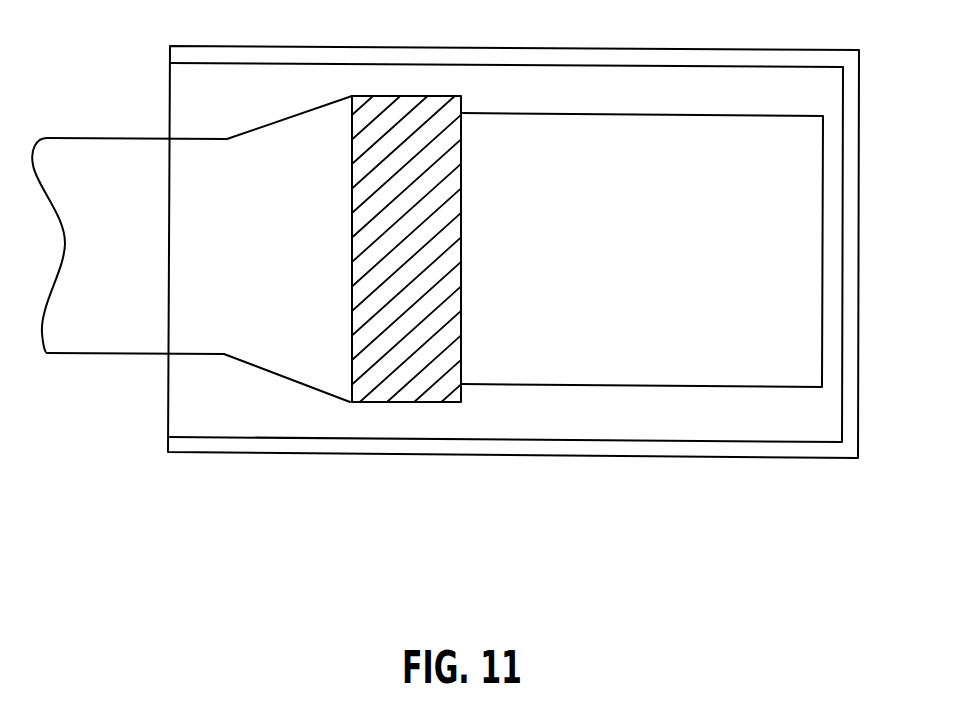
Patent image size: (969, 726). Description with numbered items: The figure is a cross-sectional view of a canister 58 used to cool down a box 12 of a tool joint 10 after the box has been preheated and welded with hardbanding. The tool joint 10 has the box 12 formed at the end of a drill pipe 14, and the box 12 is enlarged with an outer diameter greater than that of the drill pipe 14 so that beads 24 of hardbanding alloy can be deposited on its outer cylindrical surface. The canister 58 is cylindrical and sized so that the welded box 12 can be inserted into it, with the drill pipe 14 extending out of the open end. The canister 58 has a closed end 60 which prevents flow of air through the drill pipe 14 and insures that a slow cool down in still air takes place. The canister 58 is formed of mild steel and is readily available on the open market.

The tool joint for drill pipe 10 is at (673, 247).
The box 12 is at (595, 117).
The drill pipe 14 is at (90, 355).
The beads 24 is at (461, 292).
The canister 58 is at (766, 490).
The closed end 60 is at (858, 428).